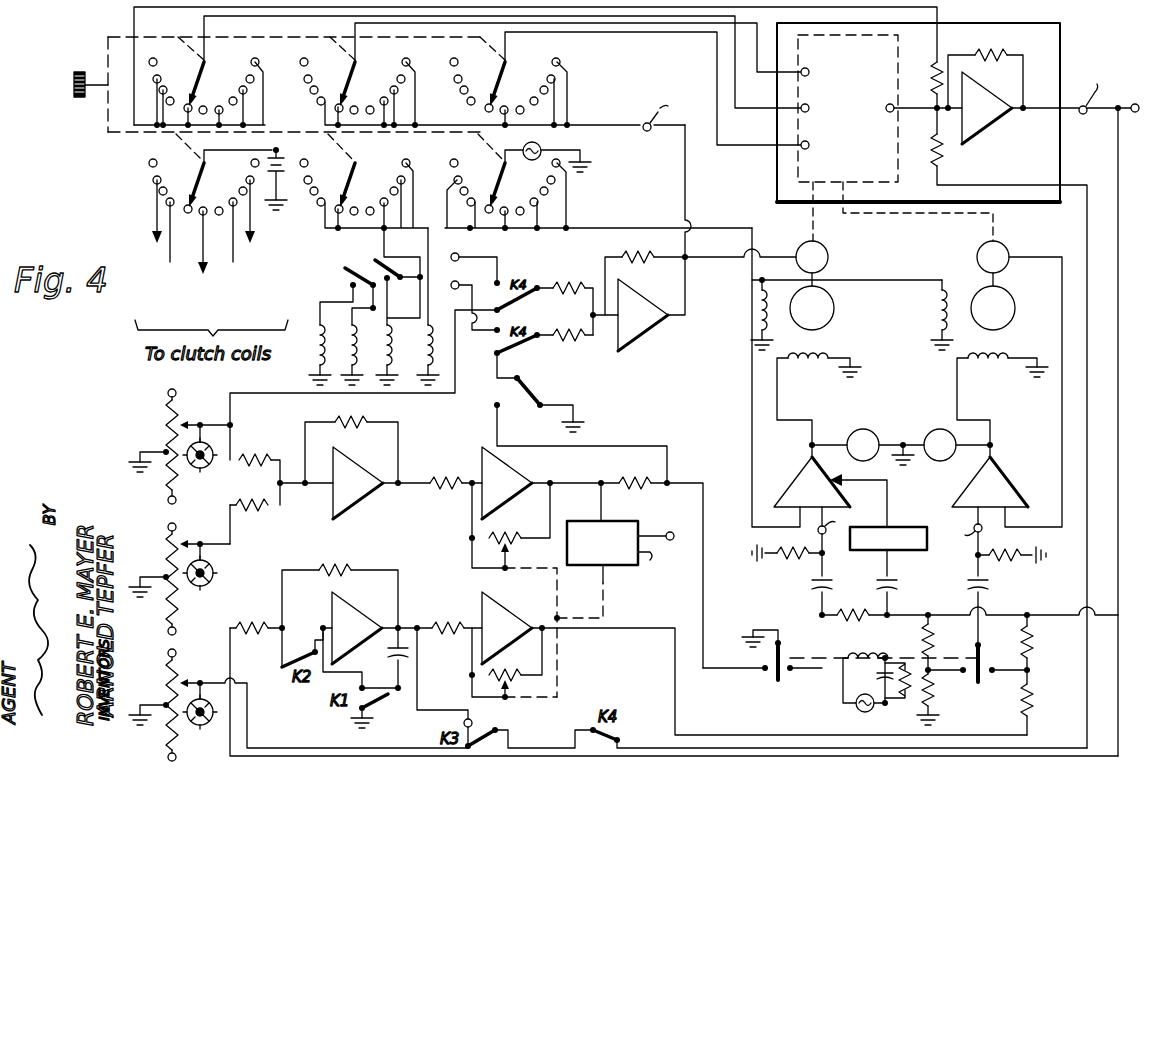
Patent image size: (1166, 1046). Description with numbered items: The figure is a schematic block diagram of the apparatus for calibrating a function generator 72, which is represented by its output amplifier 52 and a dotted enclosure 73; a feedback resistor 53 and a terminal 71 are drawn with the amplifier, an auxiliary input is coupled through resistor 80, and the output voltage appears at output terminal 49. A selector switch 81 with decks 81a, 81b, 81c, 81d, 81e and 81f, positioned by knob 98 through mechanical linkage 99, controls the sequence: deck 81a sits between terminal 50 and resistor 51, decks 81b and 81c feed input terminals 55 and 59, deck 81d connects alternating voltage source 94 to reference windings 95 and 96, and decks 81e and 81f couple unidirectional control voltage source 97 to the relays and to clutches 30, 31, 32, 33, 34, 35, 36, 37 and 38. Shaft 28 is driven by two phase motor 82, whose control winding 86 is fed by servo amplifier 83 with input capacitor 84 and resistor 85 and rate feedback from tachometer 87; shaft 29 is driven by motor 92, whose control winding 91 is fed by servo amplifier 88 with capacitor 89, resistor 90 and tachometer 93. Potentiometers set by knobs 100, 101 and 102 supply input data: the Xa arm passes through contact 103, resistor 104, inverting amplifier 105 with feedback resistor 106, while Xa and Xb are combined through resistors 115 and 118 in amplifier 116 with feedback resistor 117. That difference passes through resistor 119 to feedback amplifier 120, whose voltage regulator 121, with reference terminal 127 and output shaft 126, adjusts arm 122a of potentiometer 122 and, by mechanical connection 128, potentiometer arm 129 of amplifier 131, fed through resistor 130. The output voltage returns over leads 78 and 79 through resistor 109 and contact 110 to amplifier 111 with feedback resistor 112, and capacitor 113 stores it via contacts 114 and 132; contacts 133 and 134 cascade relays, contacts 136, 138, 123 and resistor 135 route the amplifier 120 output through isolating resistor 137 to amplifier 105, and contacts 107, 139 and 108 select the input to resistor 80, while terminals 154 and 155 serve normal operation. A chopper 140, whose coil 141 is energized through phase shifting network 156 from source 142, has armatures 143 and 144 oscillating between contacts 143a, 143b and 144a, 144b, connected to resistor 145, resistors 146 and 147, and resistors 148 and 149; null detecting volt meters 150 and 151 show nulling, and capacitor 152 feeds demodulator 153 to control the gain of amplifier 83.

The knob 98 is at (79, 71).
The mechanical linkage 99 is at (286, 34).
The selector switch 81 is at (115, 174).
The deck 81a is at (199, 89).
The deck 81b is at (492, 93).
The deck 81c is at (510, 93).
The deck 81d is at (598, 190).
The deck 81e is at (364, 195).
The deck 81f is at (210, 212).
The unidirectional control voltage source 97 is at (284, 178).
The alternating voltage source 94 is at (538, 144).
The clutch 30 is at (152, 255).
The clutch 31 is at (171, 280).
The clutch 32 is at (169, 297).
The clutch 33 is at (235, 280).
The clutch 34 is at (233, 297).
The clutch 35 is at (201, 288).
The clutch 36 is at (199, 305).
The clutch 37 is at (254, 250).
The clutch 38 is at (259, 265).
The function generator 72 is at (972, 24).
The dotted enclosure 73 is at (898, 55).
The function generator terminal 50 is at (817, 74).
The input terminal 55 is at (817, 110).
The input terminal 59 is at (817, 147).
The terminal 71 is at (914, 109).
The resistor 51 is at (932, 84).
The amplifier 52 is at (998, 124).
The feedback resistor 53 is at (994, 49).
The resistor 80 is at (932, 156).
The output terminal 49 is at (1146, 108).
The shaft 28 is at (808, 234).
The shaft 29 is at (848, 222).
The tachometer 87 is at (830, 256).
The two phase motor 82 is at (836, 302).
The tachometer 93 is at (1002, 250).
The two-phase motor 92 is at (1018, 302).
The reference winding 95 is at (846, 313).
The reference winding 96 is at (937, 312).
The control winding 86 is at (822, 376).
The control winding 91 is at (980, 366).
The null detecting volt meter 150 is at (879, 428).
The null detecting volt meter 151 is at (957, 428).
The servo amplifier 83 is at (786, 476).
The servo amplifier 88 is at (1018, 468).
The demodulator 153 is at (914, 522).
The resistor 85 is at (804, 546).
The resistor 90 is at (1018, 550).
The capacitor 84 is at (840, 582).
The capacitor 152 is at (906, 582).
The capacitor 89 is at (996, 582).
The resistor 145 is at (838, 628).
The armature 143 is at (778, 648).
The stationary contact 143a is at (808, 678).
The stationary contact 143b is at (735, 678).
The coil 141 is at (854, 650).
The chopper 140 is at (876, 684).
The alternating voltage source 142 is at (866, 714).
The phase shifting network 156 is at (898, 692).
The resistor 148 is at (936, 636).
The resistor 149 is at (936, 696).
The armature 144 is at (980, 656).
The stationary contact 144a is at (1006, 680).
The stationary contact 144b is at (950, 679).
The resistor 147 is at (1036, 638).
The resistor 146 is at (1036, 696).
The lead 78 is at (1118, 412).
The lead 79 is at (1138, 686).
The control knob 100 is at (210, 468).
The control knob 101 is at (210, 586).
The control knob 102 is at (210, 725).
The resistor 115 is at (270, 452).
The resistor 118 is at (272, 506).
The amplifier 116 is at (346, 468).
The feedback resistor 117 is at (366, 420).
The resistor 119 is at (462, 476).
The feedback amplifier 120 is at (526, 470).
The isolating resistor 137 is at (646, 474).
The feedback potentiometer 122 is at (492, 520).
The arm 122a is at (512, 558).
The output shaft 126 is at (610, 594).
The voltage regulator 121 is at (624, 530).
The terminal 127 is at (671, 532).
The resistor 109 is at (270, 622).
The contact 110 is at (302, 660).
The amplifier 111 is at (372, 612).
The feedback resistor 112 is at (350, 564).
The capacitor 113 is at (382, 664).
The contact 132 is at (366, 678).
The contact 114 is at (376, 706).
The resistor 130 is at (460, 620).
The amplifier 131 is at (524, 602).
The potentiometer arm 129 is at (496, 660).
The mechanical connection 128 is at (560, 678).
The contact 139 is at (472, 722).
The contact 107 is at (529, 747).
The contact 108 is at (832, 746).
The input terminal 154 is at (468, 261).
The input terminal 155 is at (468, 299).
The contact 103 is at (502, 312).
The resistor 104 is at (566, 299).
The contact 123 is at (504, 358).
The resistor 135 is at (565, 343).
The contact 136 is at (550, 414).
The contact 138 is at (494, 408).
The inverting amplifier 105 is at (652, 338).
The feedback resistor 106 is at (654, 252).
The contact 134 is at (342, 288).
The contact 133 is at (392, 290).